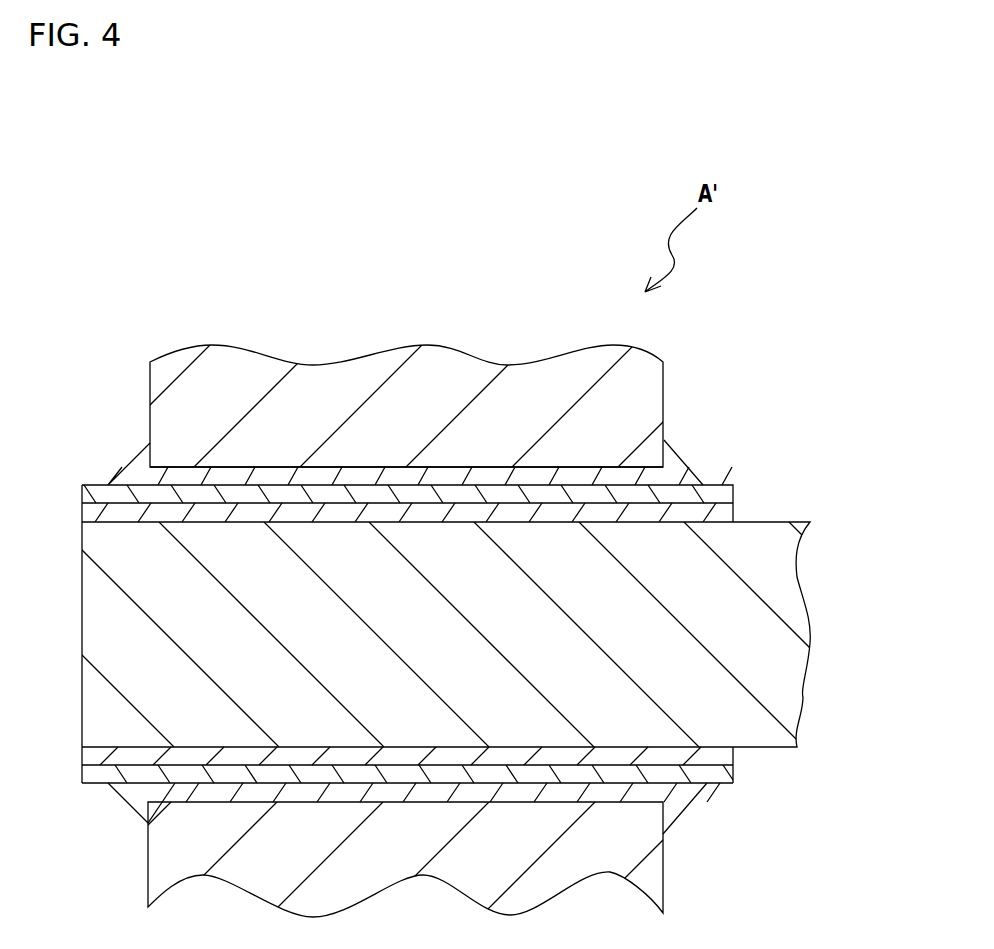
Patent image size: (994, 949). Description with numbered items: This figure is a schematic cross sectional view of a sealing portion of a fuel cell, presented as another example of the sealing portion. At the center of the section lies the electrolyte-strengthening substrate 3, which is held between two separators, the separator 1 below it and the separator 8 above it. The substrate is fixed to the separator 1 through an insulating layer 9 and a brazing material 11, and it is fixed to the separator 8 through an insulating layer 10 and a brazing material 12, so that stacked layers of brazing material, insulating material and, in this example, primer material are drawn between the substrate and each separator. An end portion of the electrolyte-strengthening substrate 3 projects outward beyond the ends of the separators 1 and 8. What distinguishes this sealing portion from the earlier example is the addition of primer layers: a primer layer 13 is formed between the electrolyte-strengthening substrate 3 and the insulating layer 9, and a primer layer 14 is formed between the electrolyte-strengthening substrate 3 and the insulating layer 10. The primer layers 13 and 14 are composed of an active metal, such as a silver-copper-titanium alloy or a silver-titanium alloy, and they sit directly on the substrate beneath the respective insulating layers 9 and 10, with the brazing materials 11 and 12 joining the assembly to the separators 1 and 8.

The separator 1 is at (655, 868).
The electrolyte-strengthening substrate 3 is at (88, 578).
The separator 8 is at (658, 397).
The insulating layer 9 is at (718, 775).
The insulating layer 10 is at (717, 493).
The brazing material 11 is at (682, 787).
The brazing material 12 is at (677, 463).
The primer layer 13 is at (732, 753).
The primer layer 14 is at (730, 510).